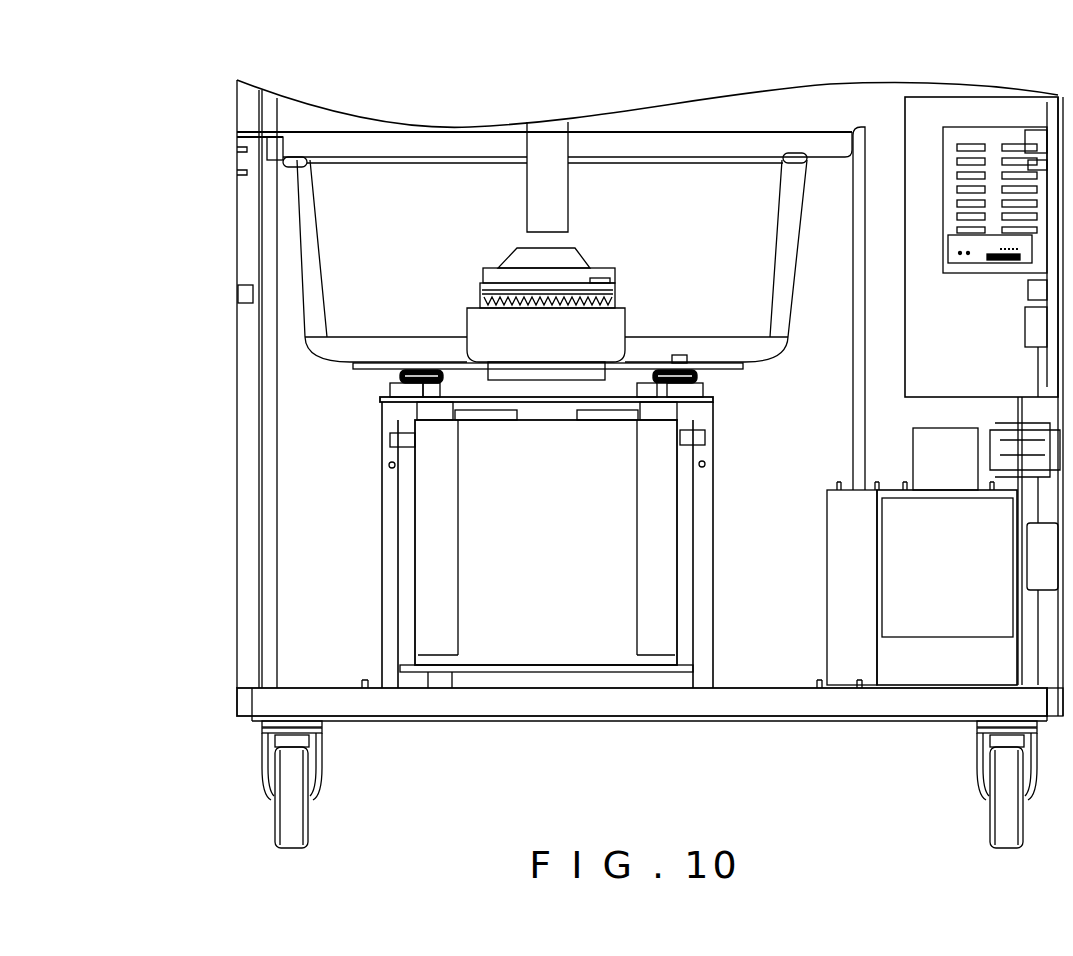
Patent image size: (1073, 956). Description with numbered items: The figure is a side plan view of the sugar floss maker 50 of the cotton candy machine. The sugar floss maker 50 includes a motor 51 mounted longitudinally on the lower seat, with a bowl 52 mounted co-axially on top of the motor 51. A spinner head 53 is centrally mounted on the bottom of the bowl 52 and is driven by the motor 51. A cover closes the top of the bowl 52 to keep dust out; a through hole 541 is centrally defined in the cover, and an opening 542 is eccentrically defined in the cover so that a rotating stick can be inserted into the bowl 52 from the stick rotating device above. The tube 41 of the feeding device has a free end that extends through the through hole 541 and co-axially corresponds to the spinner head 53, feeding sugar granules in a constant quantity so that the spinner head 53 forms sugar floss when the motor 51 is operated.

The tube 41 is at (544, 122).
The sugar floss maker 50 is at (368, 440).
The motor 51 is at (515, 648).
The bowl 52 is at (788, 203).
The spinner head 53 is at (617, 250).
The through hole 541 is at (610, 157).
The opening 542 is at (395, 157).